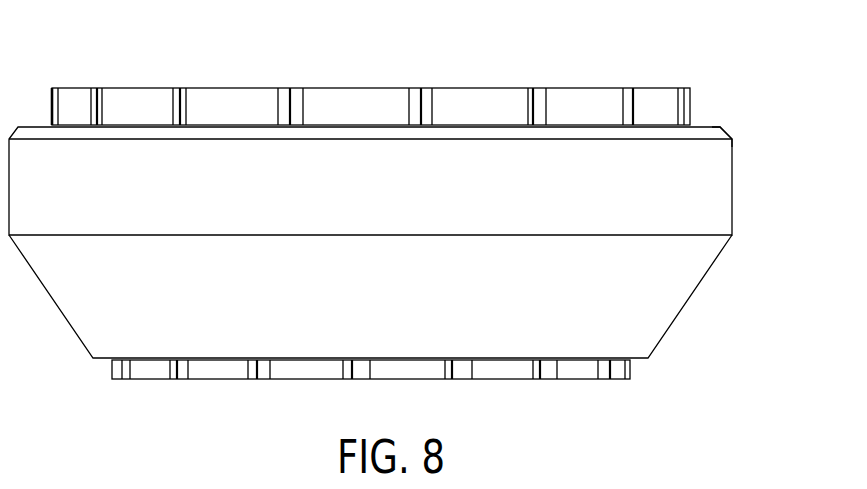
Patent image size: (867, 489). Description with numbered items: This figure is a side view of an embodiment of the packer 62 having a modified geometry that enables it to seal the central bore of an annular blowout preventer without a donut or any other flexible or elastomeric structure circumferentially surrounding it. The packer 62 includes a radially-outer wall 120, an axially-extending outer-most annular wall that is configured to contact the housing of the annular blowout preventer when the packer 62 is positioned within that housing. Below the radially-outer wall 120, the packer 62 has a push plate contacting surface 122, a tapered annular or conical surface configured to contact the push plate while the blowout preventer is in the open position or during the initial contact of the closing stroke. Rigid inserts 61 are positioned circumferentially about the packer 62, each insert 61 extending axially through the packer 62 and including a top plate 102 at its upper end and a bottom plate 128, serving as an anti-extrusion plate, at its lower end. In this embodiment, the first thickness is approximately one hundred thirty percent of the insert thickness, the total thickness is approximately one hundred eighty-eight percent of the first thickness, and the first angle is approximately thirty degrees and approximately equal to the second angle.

The rigid insert 61 is at (627, 78).
The packer 62 is at (728, 131).
The top plate 102 is at (491, 100).
The radially-outer wall 120 is at (733, 186).
The push plate contacting surface 122 is at (709, 322).
The bottom plate 128 is at (500, 372).